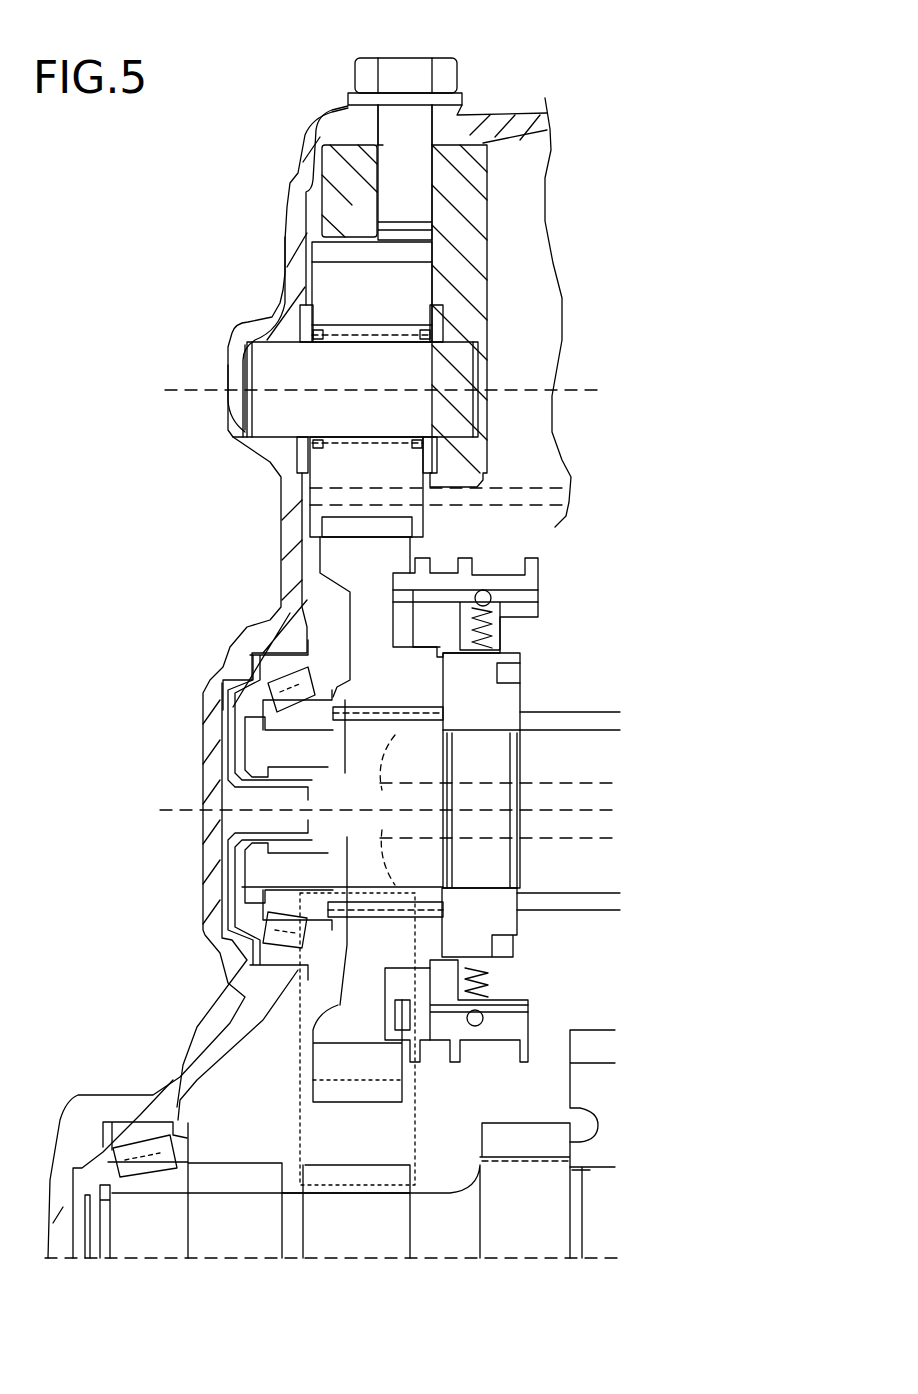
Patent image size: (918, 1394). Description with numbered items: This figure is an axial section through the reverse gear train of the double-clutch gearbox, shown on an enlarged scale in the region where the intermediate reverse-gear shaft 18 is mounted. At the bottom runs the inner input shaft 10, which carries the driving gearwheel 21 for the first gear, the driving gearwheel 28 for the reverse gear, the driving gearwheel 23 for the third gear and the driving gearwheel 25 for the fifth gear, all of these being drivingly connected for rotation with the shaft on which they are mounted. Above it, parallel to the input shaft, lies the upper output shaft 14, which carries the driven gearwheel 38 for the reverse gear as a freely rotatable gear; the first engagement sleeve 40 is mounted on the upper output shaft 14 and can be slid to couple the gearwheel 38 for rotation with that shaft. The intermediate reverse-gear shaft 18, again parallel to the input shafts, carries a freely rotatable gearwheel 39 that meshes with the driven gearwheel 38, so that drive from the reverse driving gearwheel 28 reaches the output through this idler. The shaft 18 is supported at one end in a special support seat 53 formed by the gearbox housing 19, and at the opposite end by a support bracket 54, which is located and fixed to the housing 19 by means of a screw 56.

The inner input shaft 10 is at (140, 1228).
The upper output shaft 14 is at (565, 755).
The intermediate reverse-gear shaft 18 is at (275, 370).
The housing 19 is at (295, 515).
The driving gearwheel for the first gear 21 is at (230, 1170).
The driving gearwheel for the third gear 23 is at (530, 1125).
The driving gearwheel for the fifth gear 25 is at (600, 1035).
The driving gearwheel for the reverse gear 28 is at (330, 1180).
The driven gearwheel for the reverse gear 38 is at (360, 1085).
The freely rotatable gearwheel 39 is at (320, 253).
The first engagement sleeve 40 is at (445, 1030).
The support seat 53 is at (268, 437).
The support bracket 54 is at (480, 232).
The screw 56 is at (450, 75).